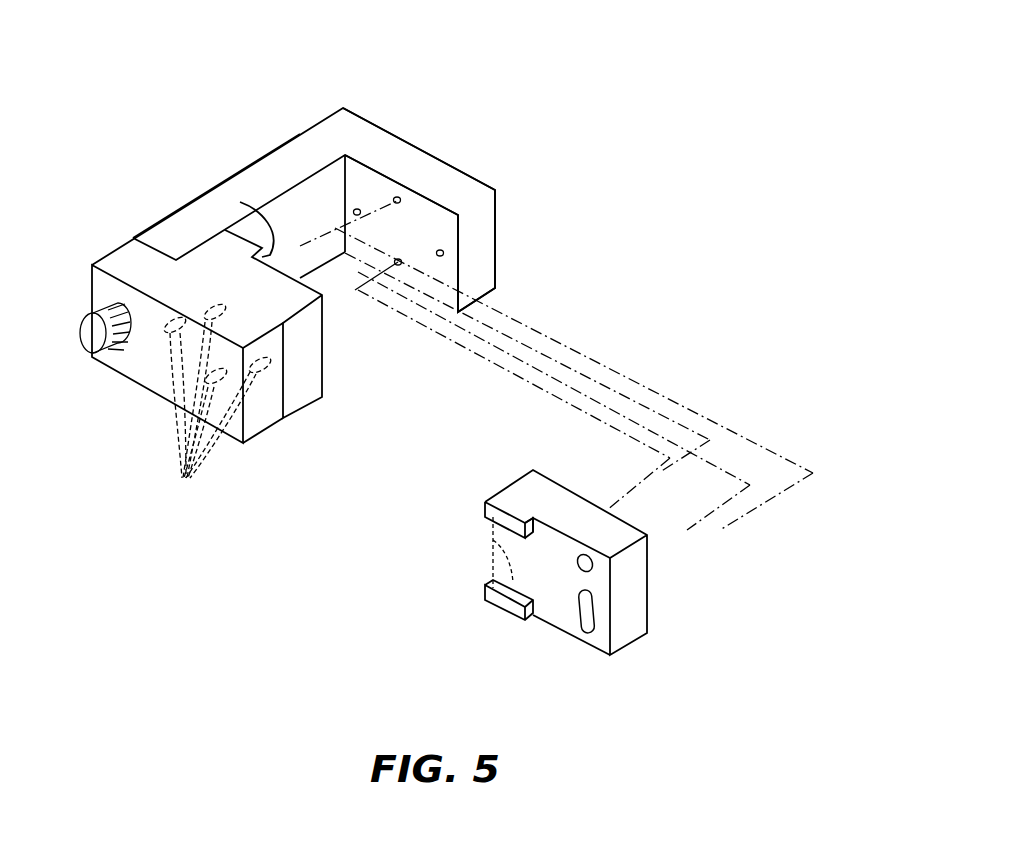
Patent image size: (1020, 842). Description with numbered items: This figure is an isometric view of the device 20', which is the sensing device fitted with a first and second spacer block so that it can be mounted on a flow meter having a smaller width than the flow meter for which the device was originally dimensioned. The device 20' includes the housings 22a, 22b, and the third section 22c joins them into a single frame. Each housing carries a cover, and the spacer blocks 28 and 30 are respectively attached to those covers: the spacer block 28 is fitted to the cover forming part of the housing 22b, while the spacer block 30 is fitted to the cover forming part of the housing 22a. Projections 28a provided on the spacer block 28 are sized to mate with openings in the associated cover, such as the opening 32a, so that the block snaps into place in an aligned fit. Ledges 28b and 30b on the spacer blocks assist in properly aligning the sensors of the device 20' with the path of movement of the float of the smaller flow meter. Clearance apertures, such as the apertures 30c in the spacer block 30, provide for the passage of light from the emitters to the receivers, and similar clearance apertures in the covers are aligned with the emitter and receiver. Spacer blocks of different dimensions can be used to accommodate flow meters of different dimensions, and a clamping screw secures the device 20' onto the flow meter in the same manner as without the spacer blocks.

The device 20' is at (293, 170).
The housing 22a is at (158, 400).
The housing 22b is at (498, 222).
The third frame section 22c is at (273, 152).
The spacer block 28 is at (309, 408).
The projections 28a is at (217, 407).
The ledge 28b is at (240, 202).
The opening 32a is at (399, 259).
The spacer block 30 is at (633, 643).
The ledge 30b is at (515, 540).
The clearance apertures 30c is at (590, 568).